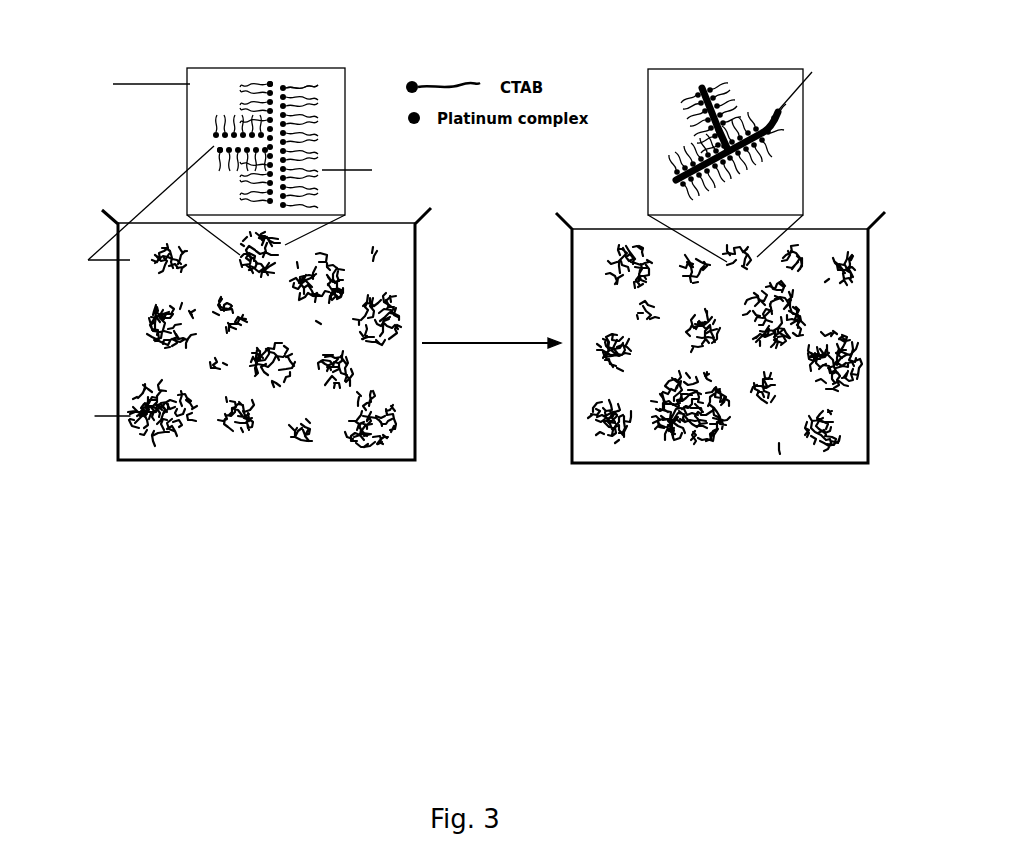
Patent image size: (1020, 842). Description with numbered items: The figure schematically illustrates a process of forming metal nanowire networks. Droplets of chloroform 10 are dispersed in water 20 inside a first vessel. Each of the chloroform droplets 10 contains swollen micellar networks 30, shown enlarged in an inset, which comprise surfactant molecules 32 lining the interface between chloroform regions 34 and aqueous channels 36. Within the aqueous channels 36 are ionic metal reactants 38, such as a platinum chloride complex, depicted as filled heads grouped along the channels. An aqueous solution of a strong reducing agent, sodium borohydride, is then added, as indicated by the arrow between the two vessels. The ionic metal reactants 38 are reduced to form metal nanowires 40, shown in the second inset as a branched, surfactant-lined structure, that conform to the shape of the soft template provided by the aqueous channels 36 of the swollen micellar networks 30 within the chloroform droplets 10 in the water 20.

The chloroform droplets 10 is at (600, 432).
The water 20 is at (598, 377).
The swollen micellar networks 30 is at (363, 144).
The surfactant molecules 32 is at (292, 80).
The chloroform regions 34 is at (208, 83).
The aqueous channels 36 is at (214, 146).
The ionic metal reactants 38 is at (267, 86).
The metal nanowires 40 is at (703, 86).